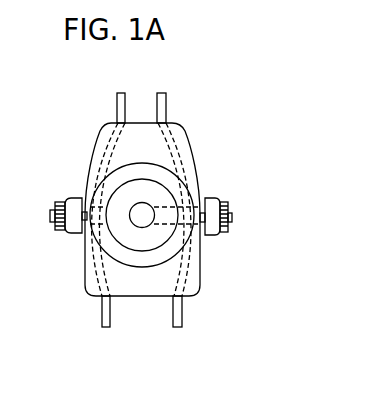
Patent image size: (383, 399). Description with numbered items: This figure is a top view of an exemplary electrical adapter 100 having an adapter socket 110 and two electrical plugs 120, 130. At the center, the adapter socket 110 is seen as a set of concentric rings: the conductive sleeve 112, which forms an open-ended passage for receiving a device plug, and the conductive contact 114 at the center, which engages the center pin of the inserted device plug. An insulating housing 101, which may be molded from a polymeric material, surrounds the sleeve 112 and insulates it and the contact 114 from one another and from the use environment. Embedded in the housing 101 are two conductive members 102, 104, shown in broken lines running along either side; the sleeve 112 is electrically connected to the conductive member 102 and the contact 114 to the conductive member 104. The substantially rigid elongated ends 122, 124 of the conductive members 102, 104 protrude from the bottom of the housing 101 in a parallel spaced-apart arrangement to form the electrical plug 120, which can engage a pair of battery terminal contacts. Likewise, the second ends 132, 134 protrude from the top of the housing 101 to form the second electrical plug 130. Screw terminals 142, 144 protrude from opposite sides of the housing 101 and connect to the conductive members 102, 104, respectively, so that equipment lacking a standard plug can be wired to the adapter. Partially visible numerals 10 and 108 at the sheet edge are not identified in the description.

The electrical adapter 100 is at (182, 219).
The insulating housing 101 is at (162, 255).
The conductive member 102 is at (98, 250).
The conductive member 104 is at (181, 162).
The conductive sleeve 112 is at (140, 181).
The conductive contact 114 is at (140, 223).
The electrical plug 120 is at (151, 343).
The elongated end 122 is at (104, 308).
The elongated end 124 is at (182, 315).
The electrical plug 130 is at (164, 85).
The second end 132 is at (123, 107).
The second end 134 is at (165, 107).
The screw terminal 142 is at (70, 198).
The screw terminal 144 is at (230, 208).
The system 10 is at (373, 354).
The base portion 108 is at (30, 393).
The adapter socket 110 is at (190, 393).